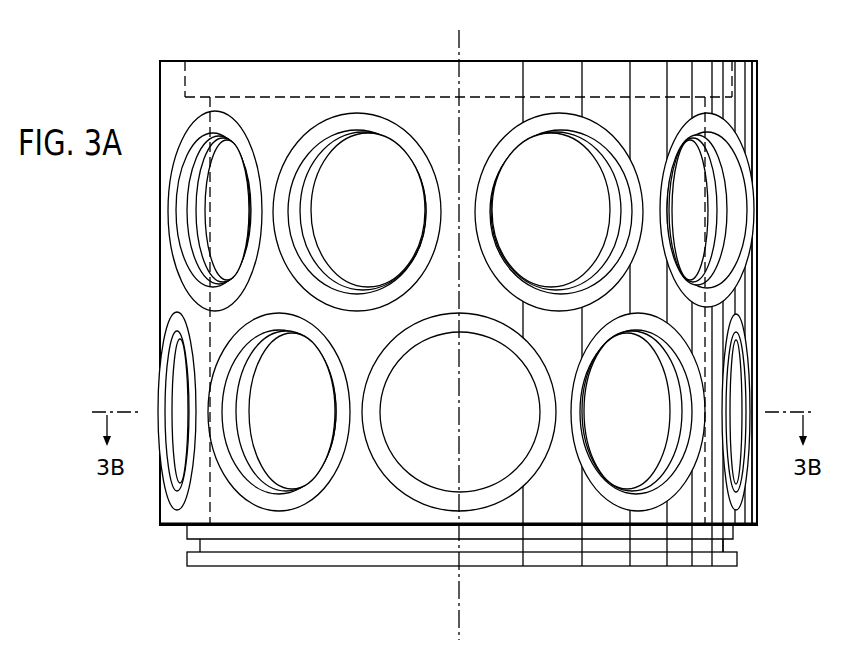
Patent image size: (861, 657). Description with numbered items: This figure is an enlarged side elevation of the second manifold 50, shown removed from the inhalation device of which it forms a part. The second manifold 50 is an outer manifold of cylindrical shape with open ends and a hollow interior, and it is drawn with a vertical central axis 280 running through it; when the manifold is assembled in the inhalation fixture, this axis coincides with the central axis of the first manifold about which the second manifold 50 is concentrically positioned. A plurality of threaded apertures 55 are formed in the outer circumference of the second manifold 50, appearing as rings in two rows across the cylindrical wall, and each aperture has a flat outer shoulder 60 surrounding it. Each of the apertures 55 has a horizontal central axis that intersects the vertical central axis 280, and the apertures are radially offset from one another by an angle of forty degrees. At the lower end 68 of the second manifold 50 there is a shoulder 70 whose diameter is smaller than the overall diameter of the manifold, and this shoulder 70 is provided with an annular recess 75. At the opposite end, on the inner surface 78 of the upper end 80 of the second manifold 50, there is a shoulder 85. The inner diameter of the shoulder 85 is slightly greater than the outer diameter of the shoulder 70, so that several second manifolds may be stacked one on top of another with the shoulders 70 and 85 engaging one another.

The second manifold 50 is at (294, 48).
The threaded apertures 55 is at (730, 219).
The flat outer shoulder 60 is at (168, 180).
The lower end 68 is at (697, 566).
The shoulder 70 is at (733, 532).
The annular recess 75 is at (723, 545).
The inner surface 78 is at (703, 104).
The upper end 80 is at (748, 62).
The shoulder 85 is at (187, 77).
The vertical central axis 280 is at (461, 585).